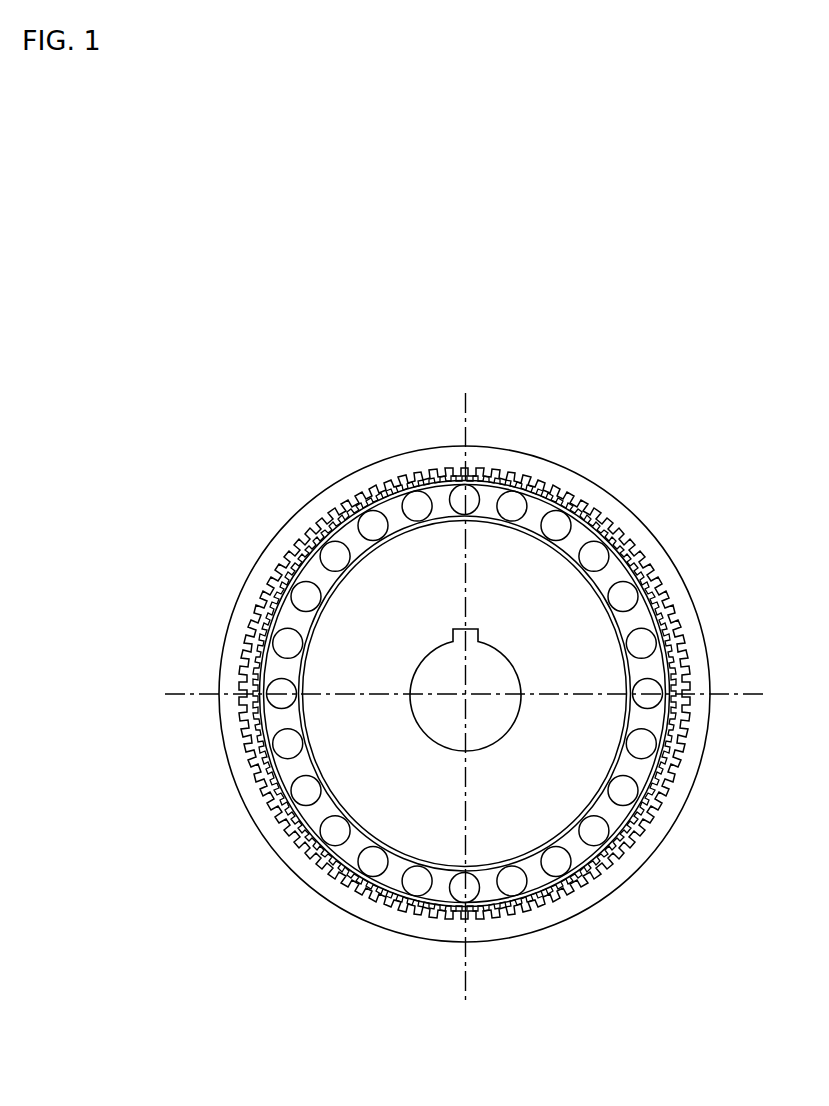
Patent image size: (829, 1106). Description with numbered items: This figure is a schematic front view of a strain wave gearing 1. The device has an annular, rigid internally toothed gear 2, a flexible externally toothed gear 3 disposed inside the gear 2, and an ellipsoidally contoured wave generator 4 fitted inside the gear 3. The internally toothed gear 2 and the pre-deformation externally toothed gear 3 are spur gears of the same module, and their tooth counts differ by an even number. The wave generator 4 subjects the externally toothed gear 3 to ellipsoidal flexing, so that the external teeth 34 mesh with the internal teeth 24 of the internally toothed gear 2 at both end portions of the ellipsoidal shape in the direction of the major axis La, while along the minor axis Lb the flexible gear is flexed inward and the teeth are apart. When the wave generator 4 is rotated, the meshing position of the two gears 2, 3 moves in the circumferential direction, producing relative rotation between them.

The strain wave gearing 1 is at (653, 455).
The rigid internally toothed gear 2 is at (677, 585).
The internal teeth 24 is at (641, 556).
The flexible externally toothed gear 3 is at (685, 635).
The external teeth 34 is at (652, 574).
The wave generator 4 is at (612, 715).
The major axis La is at (467, 585).
The minor axis Lb is at (357, 694).